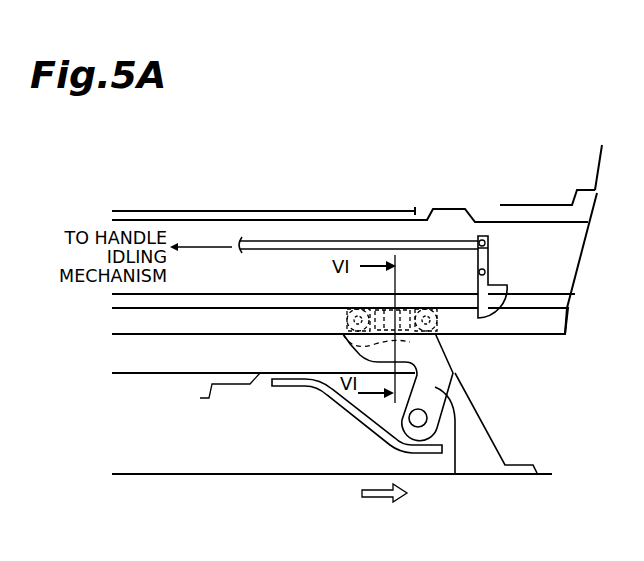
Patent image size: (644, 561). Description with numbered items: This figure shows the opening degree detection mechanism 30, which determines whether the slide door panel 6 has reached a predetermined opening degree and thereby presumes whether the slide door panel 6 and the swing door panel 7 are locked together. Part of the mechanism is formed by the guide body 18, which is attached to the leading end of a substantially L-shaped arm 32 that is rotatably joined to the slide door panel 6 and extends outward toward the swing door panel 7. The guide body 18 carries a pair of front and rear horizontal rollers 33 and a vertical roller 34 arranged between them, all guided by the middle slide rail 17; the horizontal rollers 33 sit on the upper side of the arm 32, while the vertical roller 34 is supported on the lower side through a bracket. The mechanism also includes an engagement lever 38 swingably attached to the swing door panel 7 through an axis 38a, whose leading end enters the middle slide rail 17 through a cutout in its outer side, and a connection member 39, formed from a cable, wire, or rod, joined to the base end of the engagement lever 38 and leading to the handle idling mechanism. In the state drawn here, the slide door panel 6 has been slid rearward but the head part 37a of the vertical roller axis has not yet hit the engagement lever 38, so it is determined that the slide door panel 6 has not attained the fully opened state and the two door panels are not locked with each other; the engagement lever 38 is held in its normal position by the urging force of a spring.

The slide door panel 6 is at (153, 447).
The swing door panel 7 is at (177, 230).
The middle slide rail 17 is at (527, 325).
The guide body 18 is at (408, 298).
The opening degree detection mechanism 30 is at (506, 242).
The arm 32 is at (455, 474).
The horizontal rollers 33 is at (346, 312).
The vertical roller 34 is at (413, 342).
The head part 37a is at (395, 342).
The engagement lever 38 is at (492, 290).
The axis 38a is at (478, 272).
The connection member 39 is at (308, 240).